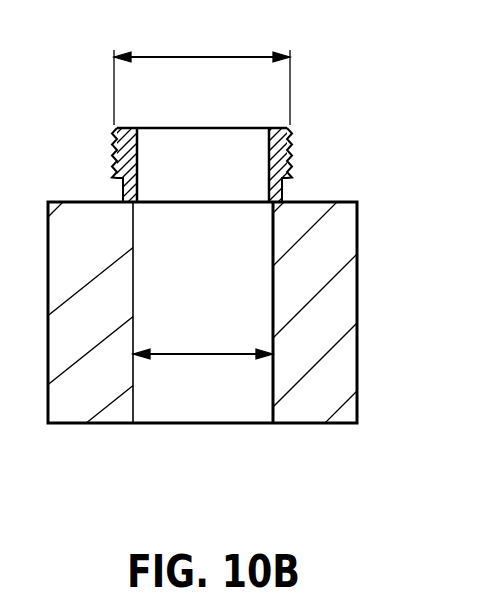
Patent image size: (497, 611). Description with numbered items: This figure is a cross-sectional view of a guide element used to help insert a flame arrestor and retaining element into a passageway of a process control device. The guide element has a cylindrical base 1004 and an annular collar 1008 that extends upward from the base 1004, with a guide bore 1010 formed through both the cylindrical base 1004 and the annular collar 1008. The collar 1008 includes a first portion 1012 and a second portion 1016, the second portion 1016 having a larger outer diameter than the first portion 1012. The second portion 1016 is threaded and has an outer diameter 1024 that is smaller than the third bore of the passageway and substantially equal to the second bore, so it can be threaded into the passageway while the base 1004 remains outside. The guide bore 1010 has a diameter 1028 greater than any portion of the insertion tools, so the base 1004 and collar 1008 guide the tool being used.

The cylindrical base 1004 is at (357, 292).
The annular collar 1008 is at (300, 146).
The guide bore 1010 is at (269, 152).
The first portion 1012 is at (282, 188).
The second portion 1016 is at (113, 155).
The outer diameter 1024 is at (202, 75).
The diameter 1028 is at (237, 355).